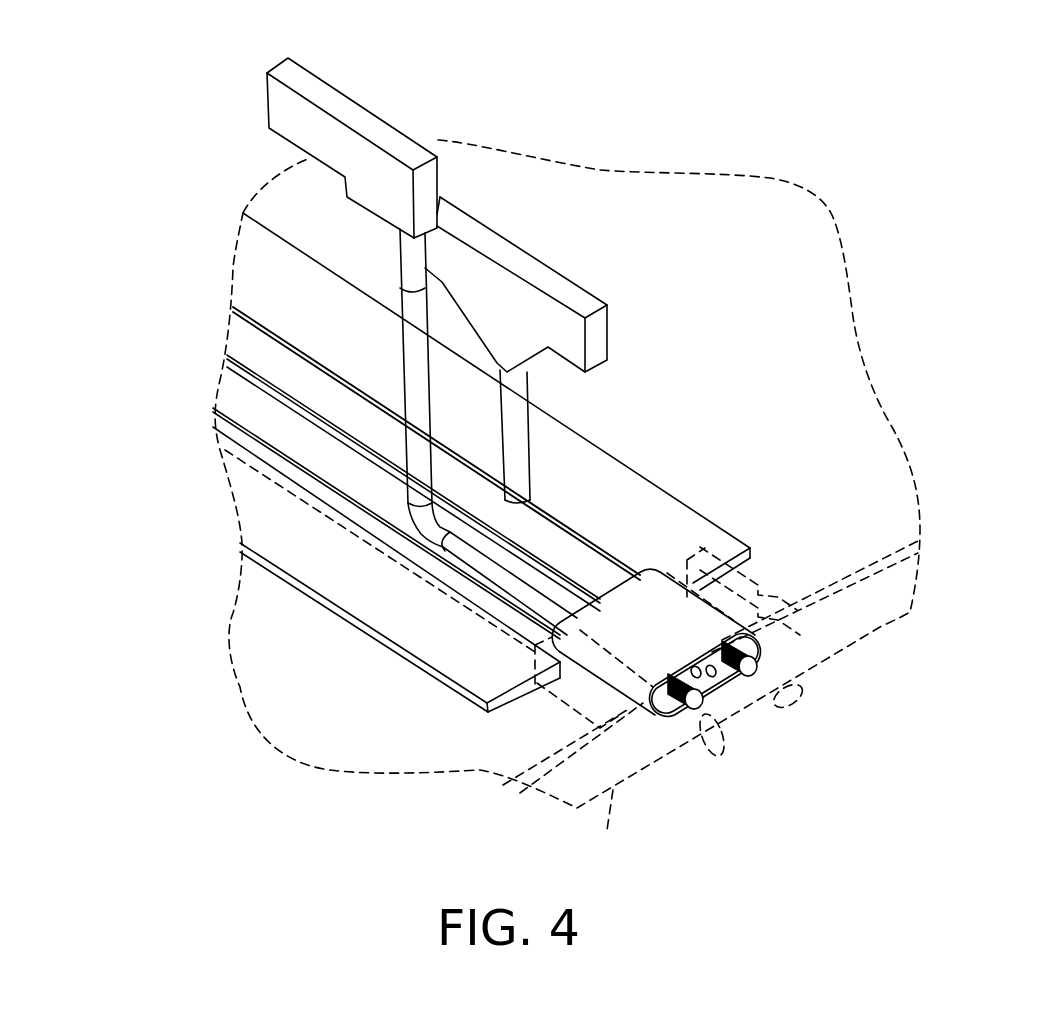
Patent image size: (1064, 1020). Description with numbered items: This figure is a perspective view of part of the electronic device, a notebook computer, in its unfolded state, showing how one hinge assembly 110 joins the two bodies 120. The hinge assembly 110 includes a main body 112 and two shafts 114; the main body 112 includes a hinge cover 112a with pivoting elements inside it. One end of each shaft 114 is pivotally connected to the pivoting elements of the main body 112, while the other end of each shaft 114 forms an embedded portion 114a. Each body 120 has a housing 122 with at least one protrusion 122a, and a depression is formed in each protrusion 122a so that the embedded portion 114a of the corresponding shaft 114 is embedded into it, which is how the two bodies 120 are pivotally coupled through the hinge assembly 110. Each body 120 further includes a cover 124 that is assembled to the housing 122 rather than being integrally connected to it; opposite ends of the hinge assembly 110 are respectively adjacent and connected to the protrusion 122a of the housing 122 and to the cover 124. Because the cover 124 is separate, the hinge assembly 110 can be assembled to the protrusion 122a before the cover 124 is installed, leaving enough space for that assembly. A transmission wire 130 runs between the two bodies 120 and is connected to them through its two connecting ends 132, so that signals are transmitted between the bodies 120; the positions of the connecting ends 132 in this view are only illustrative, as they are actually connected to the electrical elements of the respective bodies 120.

The hinge assembly 110 is at (712, 626).
The main body 112 is at (712, 601).
The hinge cover 112a is at (692, 632).
The shaft 114 is at (744, 719).
The embedded portion 114a is at (747, 665).
The body 120 is at (568, 551).
The housing 122 is at (643, 669).
The protrusion 122a is at (800, 702).
The cover 124 is at (253, 265).
The transmission wire 130 is at (515, 440).
The connecting end 132 is at (497, 270).